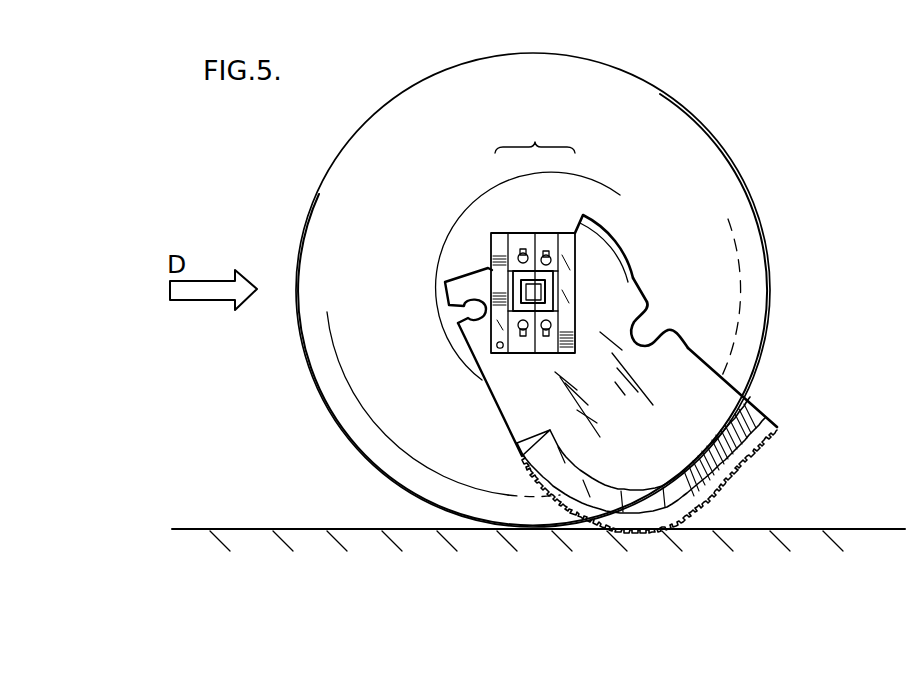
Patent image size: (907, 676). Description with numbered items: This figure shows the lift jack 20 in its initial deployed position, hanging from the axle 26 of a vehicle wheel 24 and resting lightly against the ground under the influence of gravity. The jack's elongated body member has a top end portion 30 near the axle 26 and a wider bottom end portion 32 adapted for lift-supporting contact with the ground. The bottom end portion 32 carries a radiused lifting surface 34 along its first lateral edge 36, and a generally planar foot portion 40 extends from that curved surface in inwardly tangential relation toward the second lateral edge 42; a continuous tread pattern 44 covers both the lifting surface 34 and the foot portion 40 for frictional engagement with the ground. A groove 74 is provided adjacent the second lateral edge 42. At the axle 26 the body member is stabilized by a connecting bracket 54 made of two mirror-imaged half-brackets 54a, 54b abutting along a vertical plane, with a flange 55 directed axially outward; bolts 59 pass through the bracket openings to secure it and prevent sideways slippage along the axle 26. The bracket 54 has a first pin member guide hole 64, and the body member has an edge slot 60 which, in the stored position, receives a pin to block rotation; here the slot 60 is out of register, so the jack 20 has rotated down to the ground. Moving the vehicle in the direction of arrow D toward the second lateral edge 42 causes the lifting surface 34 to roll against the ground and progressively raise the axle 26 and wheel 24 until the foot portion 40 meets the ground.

The lift jack 20 is at (386, 499).
The wheel 24 is at (342, 195).
The axle 26 is at (540, 290).
The top end portion 30 is at (595, 250).
The bottom end portion 32 is at (640, 460).
The radiused lifting surface 34 is at (546, 522).
The first lateral edge 36 is at (492, 398).
The foot portion 40 is at (762, 467).
The second lateral edge 42 is at (763, 393).
The tread pattern 44 is at (722, 478).
The connecting bracket 54 is at (535, 225).
The half-bracket 54a is at (546, 251).
The half-bracket 54b is at (520, 243).
The flange 55 is at (492, 243).
The bolt 59 is at (582, 218).
The edge slot 60 is at (458, 313).
The first pin member guide hole 64 is at (497, 343).
The groove 74 is at (654, 328).